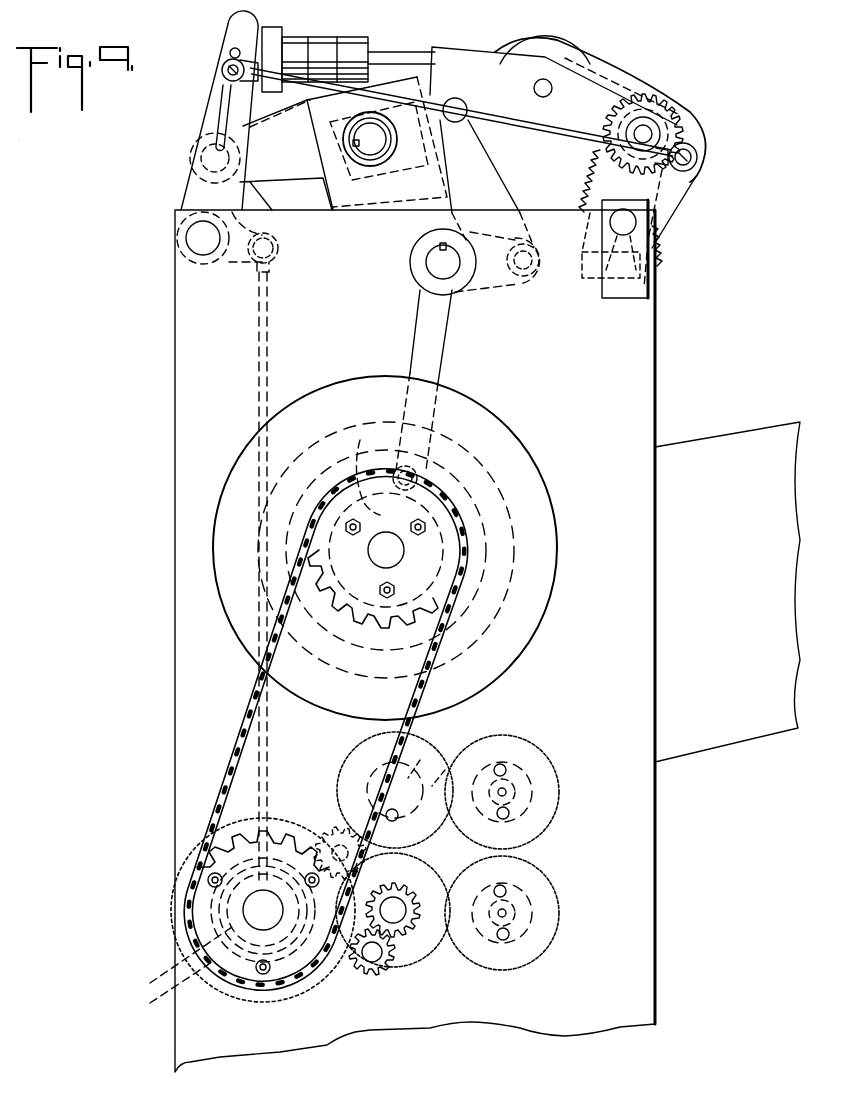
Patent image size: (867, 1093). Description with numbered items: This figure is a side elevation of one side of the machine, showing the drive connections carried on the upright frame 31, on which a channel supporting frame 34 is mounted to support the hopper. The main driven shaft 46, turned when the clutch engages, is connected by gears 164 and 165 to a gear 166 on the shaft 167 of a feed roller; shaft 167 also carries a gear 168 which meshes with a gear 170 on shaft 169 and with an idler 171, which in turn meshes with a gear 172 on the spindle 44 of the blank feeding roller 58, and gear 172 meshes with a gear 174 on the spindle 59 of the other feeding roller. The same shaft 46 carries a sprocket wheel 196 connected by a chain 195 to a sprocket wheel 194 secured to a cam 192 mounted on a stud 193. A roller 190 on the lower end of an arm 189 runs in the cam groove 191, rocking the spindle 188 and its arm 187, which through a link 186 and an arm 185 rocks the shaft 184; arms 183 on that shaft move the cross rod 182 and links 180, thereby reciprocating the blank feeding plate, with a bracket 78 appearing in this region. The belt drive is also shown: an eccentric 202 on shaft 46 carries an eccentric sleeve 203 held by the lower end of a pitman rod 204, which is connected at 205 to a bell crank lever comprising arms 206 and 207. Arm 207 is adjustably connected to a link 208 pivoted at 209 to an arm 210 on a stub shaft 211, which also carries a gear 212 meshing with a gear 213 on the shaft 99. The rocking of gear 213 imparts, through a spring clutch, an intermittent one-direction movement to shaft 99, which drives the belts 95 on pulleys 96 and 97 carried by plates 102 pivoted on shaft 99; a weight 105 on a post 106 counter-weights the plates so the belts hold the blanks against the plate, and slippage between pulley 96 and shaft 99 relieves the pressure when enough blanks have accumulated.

The upright frame 31 is at (178, 447).
The channel supporting frame 34 is at (725, 447).
The shaft 46 is at (255, 914).
The spindle 44 is at (450, 765).
The blank feeding roller 58 is at (425, 758).
The spindle 59 is at (512, 770).
The mounting bracket 78 is at (322, 160).
The belts 95 is at (590, 60).
The pulley 96 is at (646, 95).
The pulley 97 is at (556, 50).
The shaft 99 is at (657, 138).
The plate 102 is at (553, 68).
The weight 105 is at (343, 42).
The post 106 is at (433, 50).
The gear 164 is at (304, 998).
The gear 165 is at (366, 976).
The gear 166 is at (410, 930).
The shaft 167 is at (396, 920).
The gear 168 is at (413, 865).
The shaft 169 is at (518, 905).
The gear 170 is at (535, 872).
The idler 171 is at (340, 822).
The gear 172 is at (355, 757).
The gear 174 is at (505, 790).
The link 180 is at (253, 190).
The cross rod 182 is at (195, 160).
The arm 183 is at (265, 128).
The shaft 184 is at (373, 165).
The arm 185 is at (474, 148).
The link 186 is at (487, 174).
The arm 187 is at (507, 293).
The spindle 188 is at (430, 265).
The arm 189 is at (440, 335).
The roller 190 is at (412, 462).
The cam groove 191 is at (355, 445).
The cam 192 is at (550, 492).
The stud 193 is at (405, 550).
The sprocket wheel 194 is at (430, 590).
The chain 195 is at (262, 690).
The sprocket wheel 196 is at (230, 866).
The eccentric 202 is at (165, 972).
The eccentric sleeve 203 is at (168, 990).
The pitman rod 204 is at (258, 330).
The connection 205 is at (280, 248).
The bell crank arm 206 is at (245, 278).
The bell crank arm 207 is at (195, 187).
The link 208 is at (495, 118).
The pivot 209 is at (697, 157).
The arm 210 is at (682, 190).
The stub shaft 211 is at (625, 222).
The gear 212 is at (588, 196).
The gear 213 is at (652, 130).